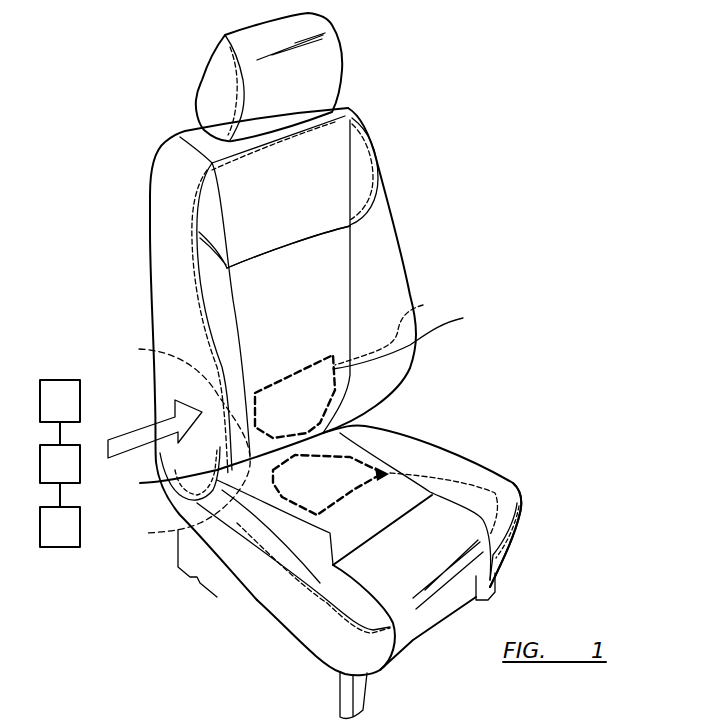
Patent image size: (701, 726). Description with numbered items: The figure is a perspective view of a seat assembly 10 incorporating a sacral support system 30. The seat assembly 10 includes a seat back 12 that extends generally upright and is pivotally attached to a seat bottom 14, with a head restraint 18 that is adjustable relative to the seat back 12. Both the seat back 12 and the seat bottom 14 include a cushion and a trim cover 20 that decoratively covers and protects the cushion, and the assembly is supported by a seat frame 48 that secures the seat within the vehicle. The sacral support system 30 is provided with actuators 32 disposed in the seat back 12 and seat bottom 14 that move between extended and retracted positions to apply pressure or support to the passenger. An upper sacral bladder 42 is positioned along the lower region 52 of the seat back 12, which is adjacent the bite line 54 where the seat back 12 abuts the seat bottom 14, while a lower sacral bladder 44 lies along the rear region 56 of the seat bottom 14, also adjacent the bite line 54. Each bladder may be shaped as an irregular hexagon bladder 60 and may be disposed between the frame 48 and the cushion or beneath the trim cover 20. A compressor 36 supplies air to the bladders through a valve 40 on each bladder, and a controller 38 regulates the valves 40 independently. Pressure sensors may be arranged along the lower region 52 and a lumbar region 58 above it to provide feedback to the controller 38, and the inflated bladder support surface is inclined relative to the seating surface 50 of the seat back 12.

The seat assembly 10 is at (114, 144).
The seat back 12 is at (415, 281).
The seat bottom 14 is at (500, 483).
The head restraint 18 is at (315, 81).
The trim cover 20 is at (522, 507).
The sacral support system 30 is at (350, 383).
The actuators 32 is at (179, 434).
The compressor 36 is at (60, 401).
The controller 38 is at (60, 527).
The valve 40 is at (60, 464).
The upper sacral bladder 42 is at (135, 534).
The lower sacral bladder 44 is at (360, 455).
The seat frame 48 is at (358, 690).
The seating surface 50 is at (327, 255).
The lower region 52 is at (322, 420).
The bite line 54 is at (160, 483).
The rear region 56 is at (268, 475).
The lumbar region 58 is at (410, 338).
The irregular hexagon bladder 60 is at (423, 305).